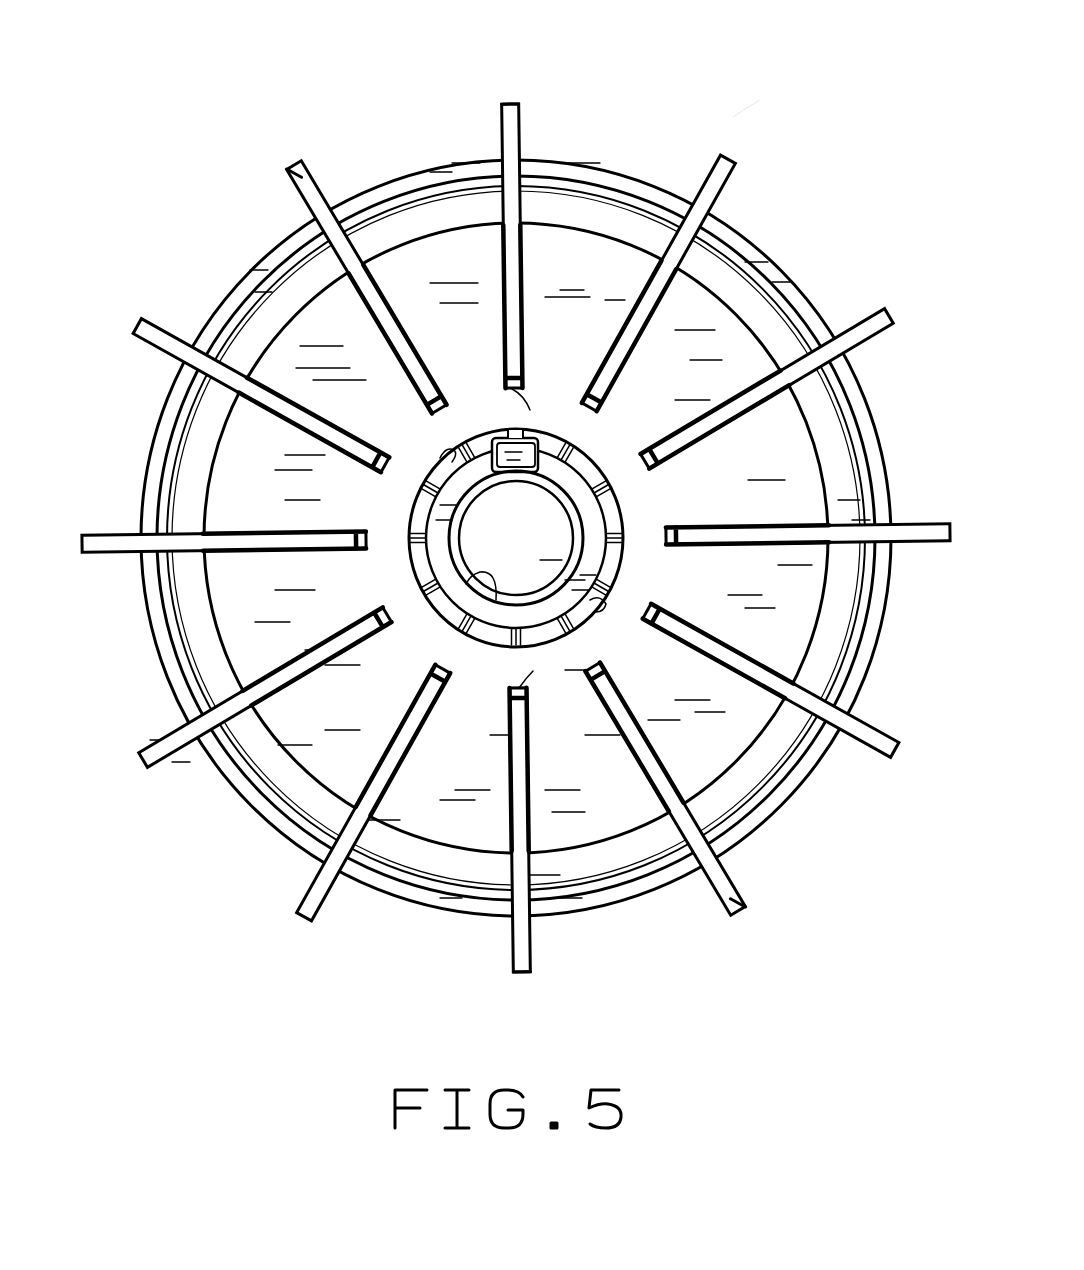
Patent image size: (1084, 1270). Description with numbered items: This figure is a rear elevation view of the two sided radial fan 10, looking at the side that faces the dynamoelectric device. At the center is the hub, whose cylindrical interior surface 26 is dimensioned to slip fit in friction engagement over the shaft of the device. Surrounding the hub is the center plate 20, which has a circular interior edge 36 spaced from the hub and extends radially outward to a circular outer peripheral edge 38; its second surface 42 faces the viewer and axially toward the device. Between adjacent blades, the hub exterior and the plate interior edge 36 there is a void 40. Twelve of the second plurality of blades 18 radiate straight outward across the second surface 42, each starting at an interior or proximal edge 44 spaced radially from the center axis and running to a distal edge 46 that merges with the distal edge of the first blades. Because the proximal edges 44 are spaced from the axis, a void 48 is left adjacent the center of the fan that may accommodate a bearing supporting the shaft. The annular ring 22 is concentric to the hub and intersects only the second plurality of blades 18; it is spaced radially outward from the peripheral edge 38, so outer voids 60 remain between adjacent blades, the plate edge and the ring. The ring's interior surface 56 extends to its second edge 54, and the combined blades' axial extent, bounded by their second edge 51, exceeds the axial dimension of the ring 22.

The two sided radial fan 10 is at (733, 117).
The second plurality of blades 18 is at (522, 138).
The center plate 20 is at (733, 365).
The annular ring 22 is at (778, 260).
The cylindrical interior surface 26 is at (496, 590).
The circular interior edge 36 is at (452, 451).
The outer peripheral edge 38 is at (217, 437).
The void 40 is at (405, 516).
The second surface 42 is at (297, 352).
The interior or proximal edges 44 is at (530, 410).
The distal edges 46 is at (506, 102).
The void 48 is at (623, 427).
The second edge of the combined blades 51 is at (318, 192).
The second edge of the ring 54 is at (468, 170).
The interior surface 56 is at (412, 203).
The outer voids 60 is at (585, 220).